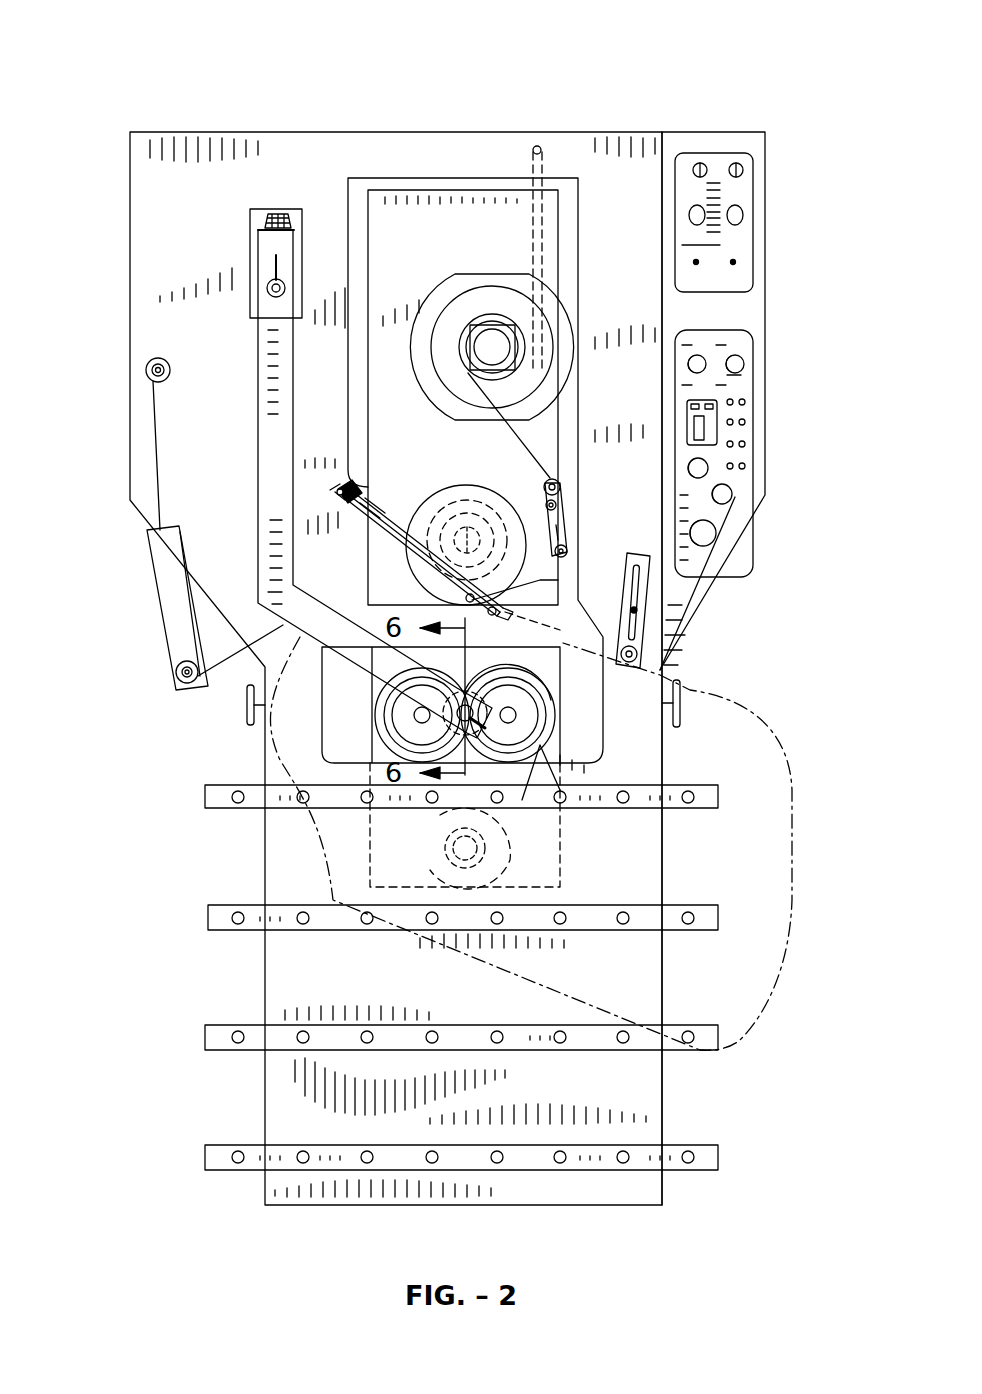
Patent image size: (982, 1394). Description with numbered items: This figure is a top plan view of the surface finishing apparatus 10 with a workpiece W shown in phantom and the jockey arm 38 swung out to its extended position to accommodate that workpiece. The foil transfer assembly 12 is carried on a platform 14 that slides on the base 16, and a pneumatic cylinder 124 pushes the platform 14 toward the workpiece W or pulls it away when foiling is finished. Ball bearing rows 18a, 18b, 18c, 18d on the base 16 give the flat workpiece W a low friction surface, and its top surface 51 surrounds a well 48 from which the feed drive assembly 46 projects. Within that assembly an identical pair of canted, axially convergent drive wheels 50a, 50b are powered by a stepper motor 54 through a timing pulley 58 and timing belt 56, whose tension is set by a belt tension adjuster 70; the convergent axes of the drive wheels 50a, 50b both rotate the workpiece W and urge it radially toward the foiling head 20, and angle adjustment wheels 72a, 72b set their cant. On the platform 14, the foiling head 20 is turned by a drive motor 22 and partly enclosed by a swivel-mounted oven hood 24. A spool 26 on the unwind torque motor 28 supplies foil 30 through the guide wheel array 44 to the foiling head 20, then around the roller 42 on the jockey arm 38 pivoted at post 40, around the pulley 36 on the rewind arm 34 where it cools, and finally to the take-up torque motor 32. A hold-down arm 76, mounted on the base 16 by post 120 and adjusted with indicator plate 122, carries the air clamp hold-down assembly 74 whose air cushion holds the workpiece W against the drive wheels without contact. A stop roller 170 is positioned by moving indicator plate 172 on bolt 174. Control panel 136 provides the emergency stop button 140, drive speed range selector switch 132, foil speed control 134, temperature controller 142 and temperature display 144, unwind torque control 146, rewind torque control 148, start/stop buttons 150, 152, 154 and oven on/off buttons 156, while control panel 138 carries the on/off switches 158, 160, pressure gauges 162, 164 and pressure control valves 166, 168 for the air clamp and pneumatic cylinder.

The surface finishing apparatus 10 is at (158, 75).
The foil transfer assembly 12 is at (605, 300).
The platform 14 is at (383, 208).
The base 16 is at (150, 240).
The ball bearing row 18a is at (215, 792).
The ball bearing row 18b is at (218, 915).
The ball bearing row 18c is at (255, 1030).
The ball bearing row 18d is at (235, 1165).
The foiling head 20 is at (540, 585).
The drive motor 22 is at (437, 497).
The oven hood 24 is at (505, 500).
The spool of transfer foil 26 is at (455, 285).
The unwind torque motor 28 is at (493, 330).
The foil 30 is at (522, 442).
The take-up torque motor 32 is at (148, 362).
The rewind arm 34 is at (155, 545).
The pulley 36 is at (178, 660).
The jockey arm 38 is at (400, 525).
The post 40 is at (348, 490).
The roller 42 is at (515, 608).
The guide wheel array 44 is at (565, 500).
The feed drive assembly 46 is at (575, 694).
The well 48 is at (547, 755).
The drive wheel 50a is at (590, 755).
The drive wheel 50b is at (378, 730).
The top surface 51 is at (352, 989).
The stepper motor 54 is at (560, 877).
The timing belt 56 is at (560, 845).
The timing pulley 58 is at (430, 869).
The belt tension adjuster 70 is at (430, 825).
The angle adjustment wheel 72a is at (683, 722).
The angle adjustment wheel 72b is at (250, 725).
The air clamp hold-down assembly 74 is at (368, 676).
The hold-down arm 76 is at (272, 480).
The post 120 is at (275, 297).
The indicator plate 122 is at (272, 212).
The pneumatic cylinder 124 is at (540, 200).
The drive speed range selector/control switch 132 is at (712, 470).
The foil speed control 134 is at (734, 494).
The control panel 136 is at (718, 538).
The control panel 138 is at (690, 158).
The emergency stop button 140 is at (716, 547).
The temperature controller 142 is at (686, 403).
The temperature display 144 is at (705, 420).
The unwind torque control 146 is at (700, 362).
The rewind torque control 148 is at (738, 362).
The start/stop buttons 150 is at (745, 467).
The start/stop buttons 152 is at (745, 445).
The start/stop buttons 154 is at (745, 423).
The on/off buttons 156 is at (742, 402).
The on/off switch 158 is at (696, 262).
The on/off switch 160 is at (738, 257).
The pressure gauge 162 is at (700, 210).
The pressure gauge 164 is at (740, 213).
The pressure control valve 166 is at (702, 163).
The pressure control valve 168 is at (740, 163).
The stop roller 170 is at (645, 668).
The indicator plate 172 is at (640, 645).
The bolt 174 is at (640, 610).
The workpiece W is at (775, 1015).